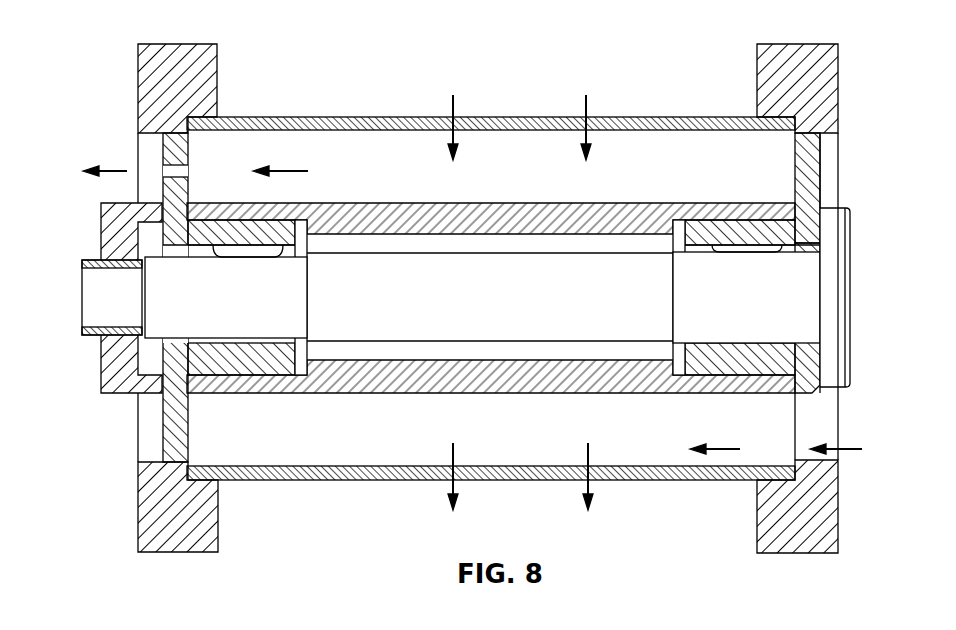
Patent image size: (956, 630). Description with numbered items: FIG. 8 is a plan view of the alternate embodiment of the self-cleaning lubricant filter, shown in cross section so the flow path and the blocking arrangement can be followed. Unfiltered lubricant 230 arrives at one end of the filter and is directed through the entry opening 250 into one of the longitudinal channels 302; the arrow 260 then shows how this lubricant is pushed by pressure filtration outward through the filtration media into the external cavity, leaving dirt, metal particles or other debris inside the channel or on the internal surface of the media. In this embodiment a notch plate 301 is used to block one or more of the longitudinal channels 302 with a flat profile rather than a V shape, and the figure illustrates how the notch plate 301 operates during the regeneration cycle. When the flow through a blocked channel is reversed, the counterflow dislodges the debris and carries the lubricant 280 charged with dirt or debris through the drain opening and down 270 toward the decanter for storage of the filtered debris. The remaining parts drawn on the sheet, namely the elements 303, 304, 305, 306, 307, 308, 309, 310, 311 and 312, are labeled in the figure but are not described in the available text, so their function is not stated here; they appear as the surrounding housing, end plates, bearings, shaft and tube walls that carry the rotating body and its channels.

The unfiltered lubricant 230 is at (845, 449).
The entry opening 250 is at (453, 103).
The arrow 260 is at (448, 485).
The drain flow direction 270 is at (113, 168).
The lubricant charged with dirt or debris 280 is at (354, 184).
The notch plate 301 is at (808, 155).
The longitudinal channels 302 is at (783, 432).
The end hub 303 is at (808, 190).
The mounting flange 304 is at (795, 58).
The second bearing 305 is at (760, 247).
The first bearing 306 is at (248, 255).
The shaft 307 is at (512, 311).
The inner tube 308 is at (475, 213).
The outer tube 309 is at (685, 133).
The port 310 is at (187, 170).
The hub 311 is at (175, 430).
The shaft end 312 is at (98, 288).